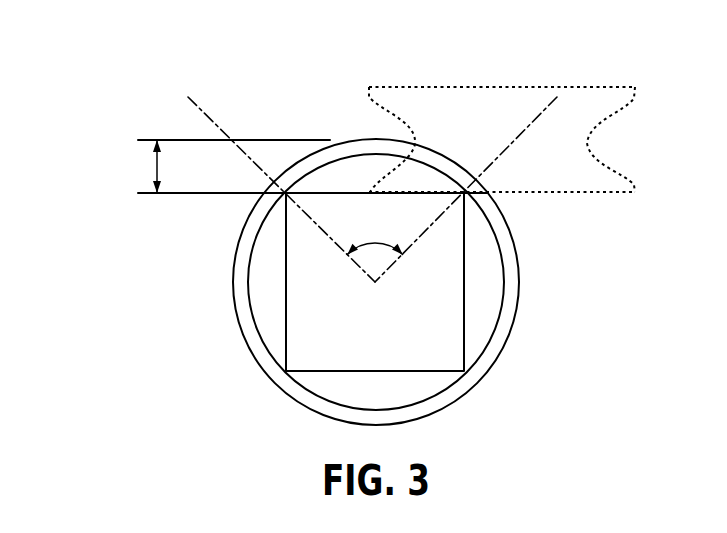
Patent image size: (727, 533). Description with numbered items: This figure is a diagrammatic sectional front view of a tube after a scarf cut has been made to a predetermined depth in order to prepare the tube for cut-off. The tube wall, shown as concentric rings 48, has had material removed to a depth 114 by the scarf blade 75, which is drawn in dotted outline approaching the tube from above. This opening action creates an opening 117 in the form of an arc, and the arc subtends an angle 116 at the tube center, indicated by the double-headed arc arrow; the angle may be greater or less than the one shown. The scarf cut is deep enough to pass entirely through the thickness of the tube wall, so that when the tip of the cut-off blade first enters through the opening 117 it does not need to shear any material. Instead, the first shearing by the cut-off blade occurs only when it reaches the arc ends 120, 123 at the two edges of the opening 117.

The tubular member / sleeve 48 is at (503, 330).
The scarf blade 75 is at (442, 98).
The depth 114 is at (157, 165).
The angle 116 is at (373, 243).
The opening 117 is at (342, 152).
The arc end 120 is at (285, 191).
The arc end 123 is at (464, 192).